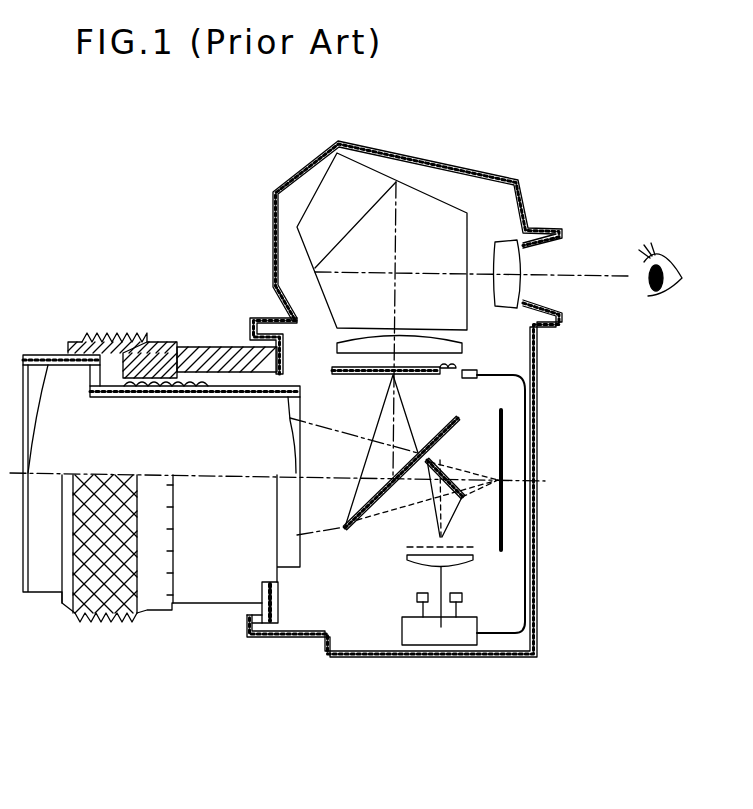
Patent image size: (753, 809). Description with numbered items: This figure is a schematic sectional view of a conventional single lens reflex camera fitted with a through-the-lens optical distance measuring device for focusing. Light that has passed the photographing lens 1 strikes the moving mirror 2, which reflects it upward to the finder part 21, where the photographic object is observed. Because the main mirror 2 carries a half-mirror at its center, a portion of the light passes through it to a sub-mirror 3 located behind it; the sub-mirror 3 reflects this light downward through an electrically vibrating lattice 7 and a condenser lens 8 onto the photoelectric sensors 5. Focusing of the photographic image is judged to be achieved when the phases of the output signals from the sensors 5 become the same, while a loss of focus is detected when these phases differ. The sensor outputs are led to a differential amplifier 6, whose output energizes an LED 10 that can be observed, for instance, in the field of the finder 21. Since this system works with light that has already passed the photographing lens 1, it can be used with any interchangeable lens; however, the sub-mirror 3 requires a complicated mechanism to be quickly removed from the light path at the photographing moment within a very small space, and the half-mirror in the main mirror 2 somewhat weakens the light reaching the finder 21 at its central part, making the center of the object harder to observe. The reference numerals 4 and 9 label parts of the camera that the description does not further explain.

The photographing lens 1 is at (43, 588).
The moving mirror 2 is at (346, 530).
The sub-mirror 3 is at (440, 466).
The film 4 is at (507, 418).
The photoelectric sensors 5 is at (462, 593).
The differential amplifier 6 is at (459, 640).
The electrically vibrating lattice 7 is at (408, 549).
The condenser lens 8 is at (412, 565).
The focusing screen 9 is at (333, 367).
The LED 10 is at (460, 366).
The finder part 21 is at (483, 183).